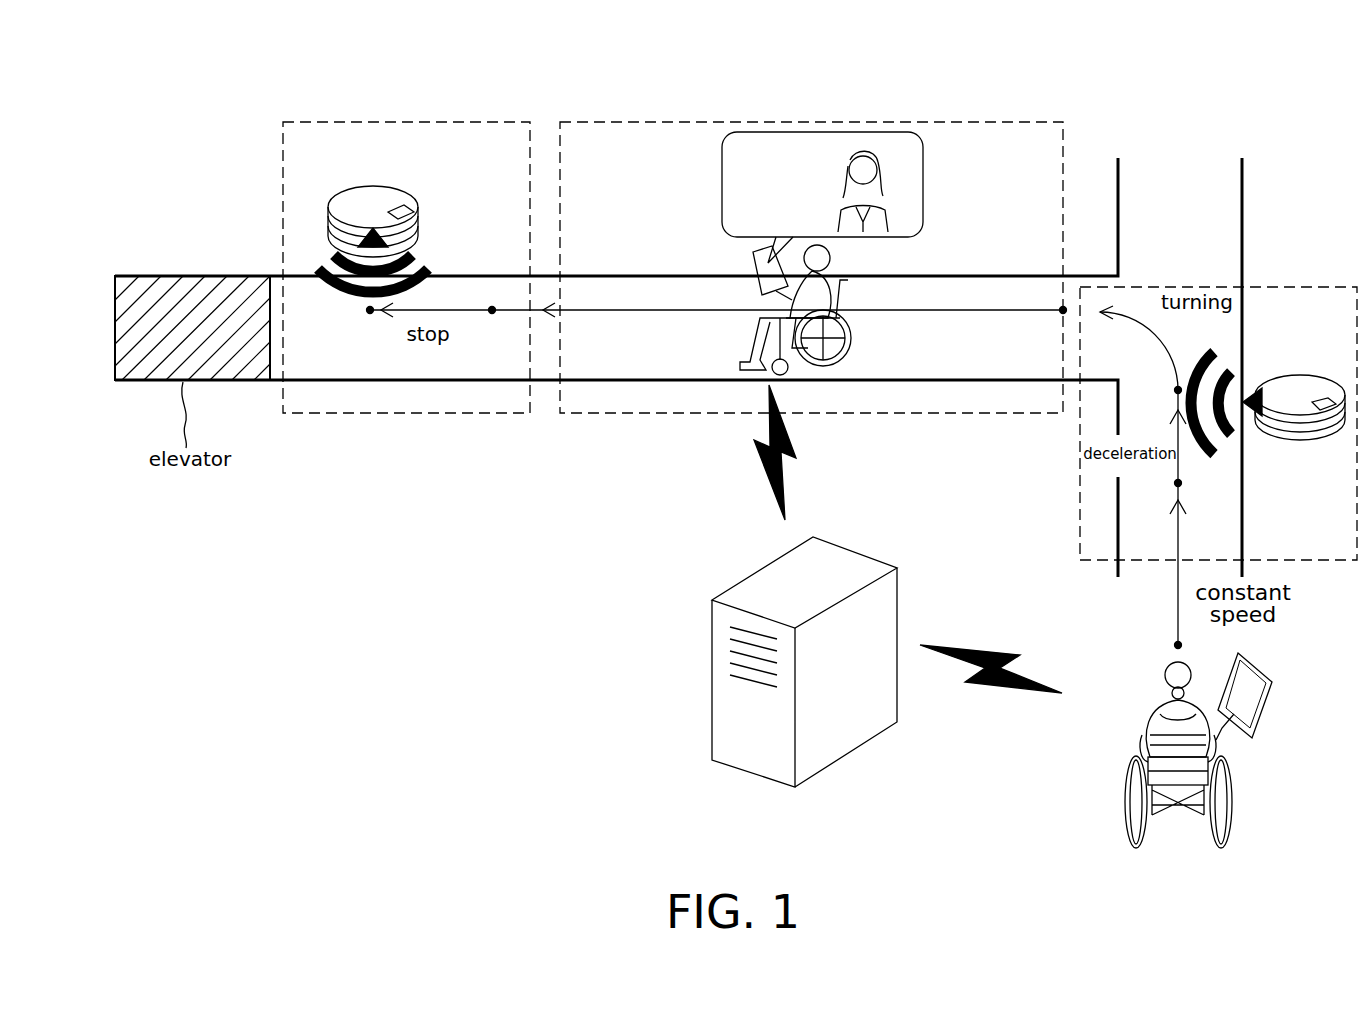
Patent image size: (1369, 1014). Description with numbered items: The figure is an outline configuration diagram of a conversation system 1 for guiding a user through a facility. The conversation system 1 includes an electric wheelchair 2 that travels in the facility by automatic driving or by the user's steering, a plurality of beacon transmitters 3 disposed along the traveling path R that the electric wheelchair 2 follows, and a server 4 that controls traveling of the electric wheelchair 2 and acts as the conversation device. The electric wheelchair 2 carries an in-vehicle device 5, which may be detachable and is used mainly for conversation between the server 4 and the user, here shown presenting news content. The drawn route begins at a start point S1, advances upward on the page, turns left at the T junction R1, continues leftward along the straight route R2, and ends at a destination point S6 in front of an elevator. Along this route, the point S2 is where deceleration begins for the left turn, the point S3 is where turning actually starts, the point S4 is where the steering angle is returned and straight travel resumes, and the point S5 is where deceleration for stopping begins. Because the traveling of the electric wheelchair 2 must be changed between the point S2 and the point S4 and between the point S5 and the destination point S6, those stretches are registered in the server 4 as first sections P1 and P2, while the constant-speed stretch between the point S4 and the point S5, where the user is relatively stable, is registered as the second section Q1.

The conversation system 1 is at (658, 80).
The electric wheelchair 2 is at (852, 343).
The beacon transmitter 3 is at (376, 207).
The server 4 is at (711, 679).
The in-vehicle device 5 is at (752, 265).
The traveling path R is at (1110, 128).
The T junction R1 is at (1244, 202).
The straight route R2 is at (657, 382).
The first section P1 is at (1078, 513).
The first section P2 is at (428, 416).
The second section Q1 is at (900, 416).
The start point S1 is at (1182, 645).
The deceleration start point S2 is at (1182, 483).
The turning start point S3 is at (1176, 390).
The straight-ahead start point S4 is at (1063, 308).
The stopping deceleration start point S5 is at (492, 314).
The destination point S6 is at (370, 314).